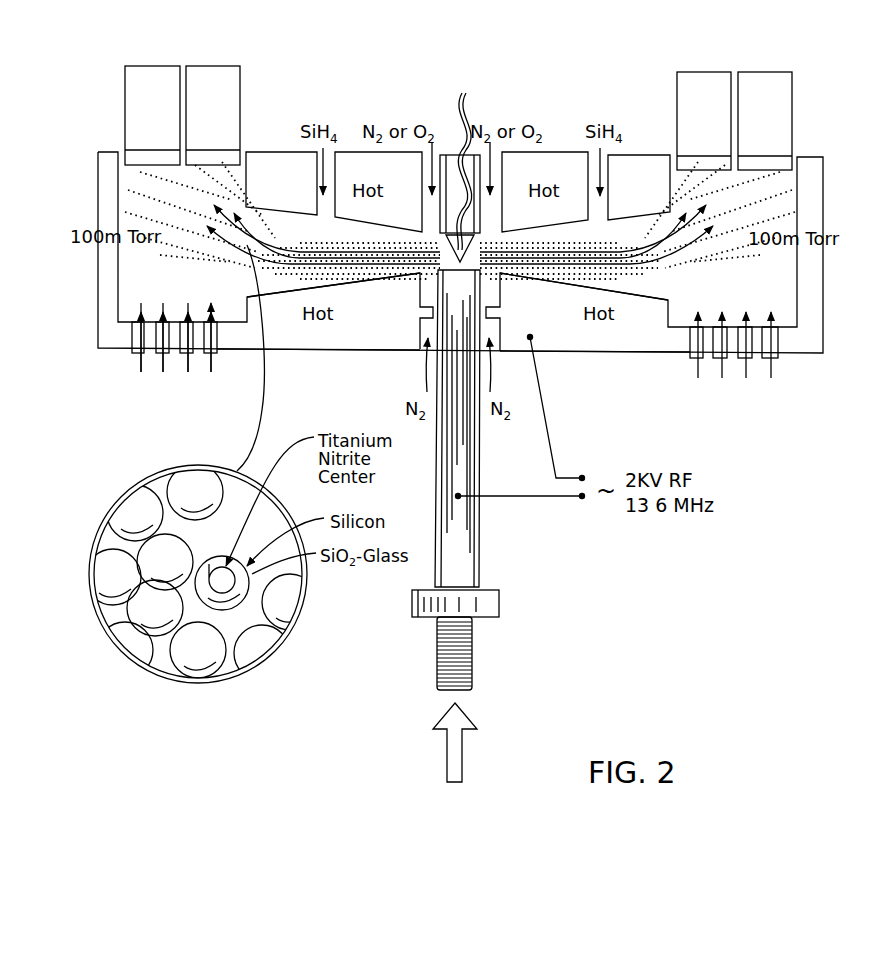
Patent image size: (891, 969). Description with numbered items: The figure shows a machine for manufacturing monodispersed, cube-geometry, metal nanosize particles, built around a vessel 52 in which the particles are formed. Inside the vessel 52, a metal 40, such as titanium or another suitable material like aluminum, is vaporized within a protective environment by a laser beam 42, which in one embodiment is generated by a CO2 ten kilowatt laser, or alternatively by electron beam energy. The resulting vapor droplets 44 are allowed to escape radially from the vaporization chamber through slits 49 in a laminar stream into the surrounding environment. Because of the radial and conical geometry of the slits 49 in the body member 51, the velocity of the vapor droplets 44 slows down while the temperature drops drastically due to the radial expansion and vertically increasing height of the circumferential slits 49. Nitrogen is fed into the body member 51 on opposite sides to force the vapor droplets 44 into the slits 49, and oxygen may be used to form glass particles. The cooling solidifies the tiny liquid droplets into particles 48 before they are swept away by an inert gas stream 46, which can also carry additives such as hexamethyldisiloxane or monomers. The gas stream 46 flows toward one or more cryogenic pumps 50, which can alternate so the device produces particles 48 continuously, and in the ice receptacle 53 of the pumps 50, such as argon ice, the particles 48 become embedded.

The metal 40 is at (486, 565).
The laser beam 42 is at (466, 95).
The vapor droplets 44 is at (368, 245).
The inert gas stream 46 is at (455, 354).
The particles 48 is at (205, 242).
The slits 49 is at (367, 280).
The cryogenic pumps 50 is at (218, 65).
The body member 51 is at (256, 353).
The vessel 52 is at (890, 179).
The ice receptacle 53 is at (232, 150).